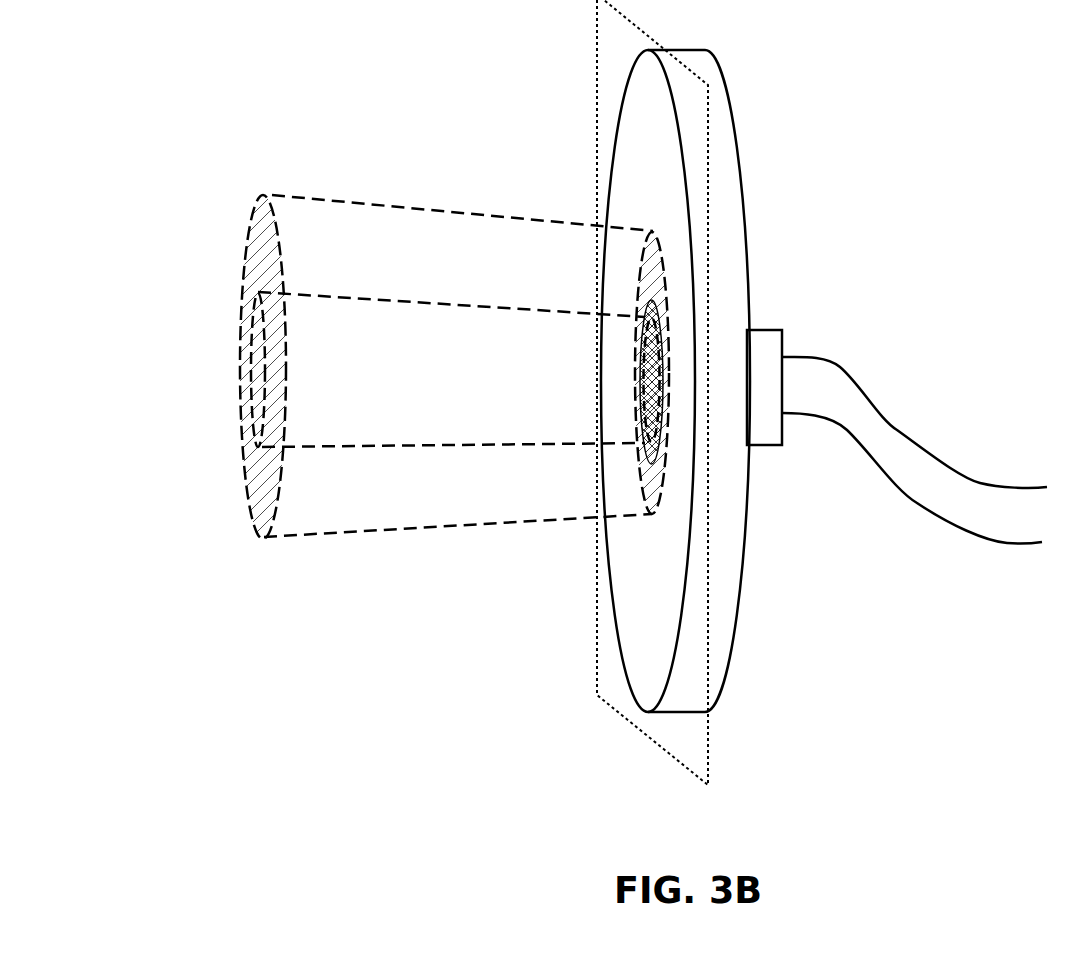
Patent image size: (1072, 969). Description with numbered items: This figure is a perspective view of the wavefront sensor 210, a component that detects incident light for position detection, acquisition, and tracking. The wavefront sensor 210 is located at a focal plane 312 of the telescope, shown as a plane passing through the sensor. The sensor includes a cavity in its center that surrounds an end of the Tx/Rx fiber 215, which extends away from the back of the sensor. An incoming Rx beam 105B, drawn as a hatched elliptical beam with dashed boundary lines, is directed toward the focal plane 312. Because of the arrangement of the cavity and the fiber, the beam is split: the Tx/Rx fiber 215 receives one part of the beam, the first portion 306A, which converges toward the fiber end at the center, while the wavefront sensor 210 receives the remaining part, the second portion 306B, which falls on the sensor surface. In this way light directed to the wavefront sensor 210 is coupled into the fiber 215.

The Rx beam 105B is at (272, 195).
The first portion 306A is at (363, 337).
The second portion 306B is at (378, 483).
The wavefront sensor 210 is at (722, 160).
The Tx/Rx fiber 215 is at (883, 440).
The focal plane 312 is at (708, 750).